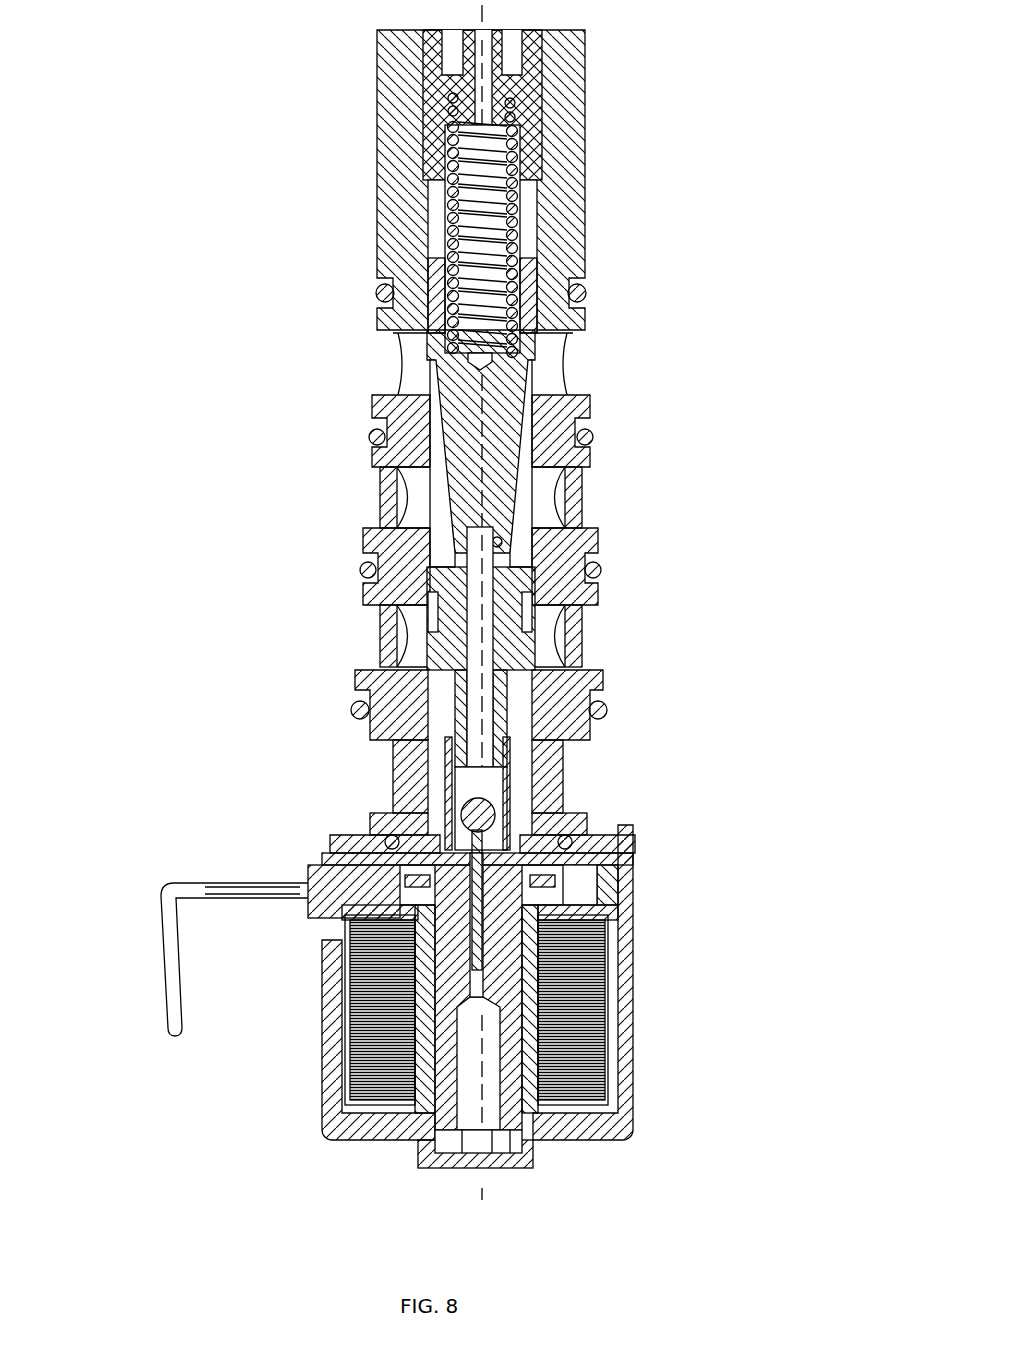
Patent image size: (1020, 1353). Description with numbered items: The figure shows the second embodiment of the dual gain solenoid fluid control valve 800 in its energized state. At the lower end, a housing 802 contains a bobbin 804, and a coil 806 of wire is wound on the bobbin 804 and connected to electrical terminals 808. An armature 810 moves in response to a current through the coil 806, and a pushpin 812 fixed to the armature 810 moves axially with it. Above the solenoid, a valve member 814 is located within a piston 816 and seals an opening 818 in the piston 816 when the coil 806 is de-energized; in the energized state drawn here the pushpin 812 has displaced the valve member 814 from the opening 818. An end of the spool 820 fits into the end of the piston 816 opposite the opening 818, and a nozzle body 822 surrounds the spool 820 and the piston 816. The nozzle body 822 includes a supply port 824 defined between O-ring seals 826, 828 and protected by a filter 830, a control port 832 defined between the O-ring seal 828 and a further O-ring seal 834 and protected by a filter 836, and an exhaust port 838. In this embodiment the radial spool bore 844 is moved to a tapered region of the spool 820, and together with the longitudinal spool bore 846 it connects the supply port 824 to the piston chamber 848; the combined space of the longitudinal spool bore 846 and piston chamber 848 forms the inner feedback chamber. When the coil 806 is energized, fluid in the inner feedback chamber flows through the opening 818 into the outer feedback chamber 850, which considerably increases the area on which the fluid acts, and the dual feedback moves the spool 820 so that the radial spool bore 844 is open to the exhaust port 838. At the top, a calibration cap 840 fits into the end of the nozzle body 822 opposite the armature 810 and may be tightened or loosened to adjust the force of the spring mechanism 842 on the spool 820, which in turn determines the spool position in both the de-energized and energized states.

The dual gain solenoid fluid control valve 800 is at (434, 602).
The housing 802 is at (626, 981).
The bobbin 804 is at (602, 898).
The coil 806 is at (603, 1056).
The electrical terminals 808 is at (166, 978).
The armature 810 is at (598, 940).
The pushpin 812 is at (483, 903).
The valve member 814 is at (488, 818).
The piston 816 is at (507, 786).
The opening 818 is at (372, 832).
The spool 820 is at (437, 652).
The nozzle body 822 is at (601, 737).
The supply port 824 is at (397, 597).
The O-ring seal 826 is at (352, 710).
The O-ring seal 828 is at (360, 572).
The filter 830 is at (382, 646).
The control port 832 is at (409, 485).
The O-ring seal 834 is at (369, 437).
The filter 836 is at (383, 498).
The exhaust port 838 is at (378, 360).
The calibration cap 840 is at (533, 97).
The spring mechanism 842 is at (497, 273).
The radial spool bore 844 is at (500, 542).
The longitudinal spool bore 846 is at (487, 667).
The piston chamber 848 is at (495, 843).
The outer feedback chamber 850 is at (440, 767).